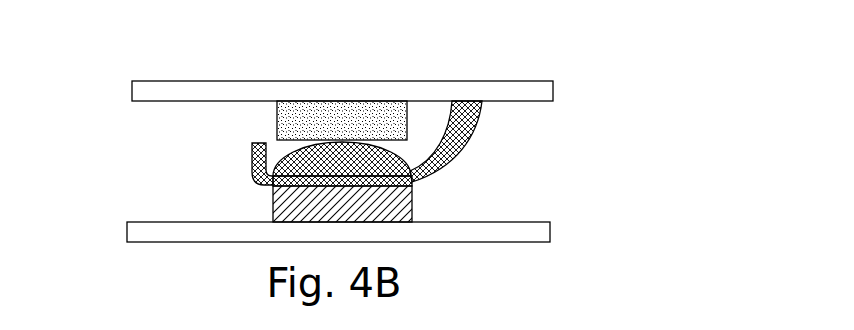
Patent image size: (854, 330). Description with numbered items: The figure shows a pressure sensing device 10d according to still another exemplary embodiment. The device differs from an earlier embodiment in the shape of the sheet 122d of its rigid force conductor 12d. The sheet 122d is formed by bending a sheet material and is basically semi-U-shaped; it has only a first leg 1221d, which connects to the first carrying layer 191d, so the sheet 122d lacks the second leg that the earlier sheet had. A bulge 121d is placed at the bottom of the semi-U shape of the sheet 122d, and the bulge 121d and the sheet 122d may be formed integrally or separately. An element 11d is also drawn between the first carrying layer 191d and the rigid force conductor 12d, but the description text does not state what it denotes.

The pressure sensing device 10d is at (382, 47).
The first carrying layer 191d is at (131, 80).
The light source 11d is at (277, 105).
The rigid force conductor 12d is at (157, 121).
The bulge 121d is at (283, 152).
The sheet 122d is at (252, 158).
The first leg 1221d is at (482, 105).